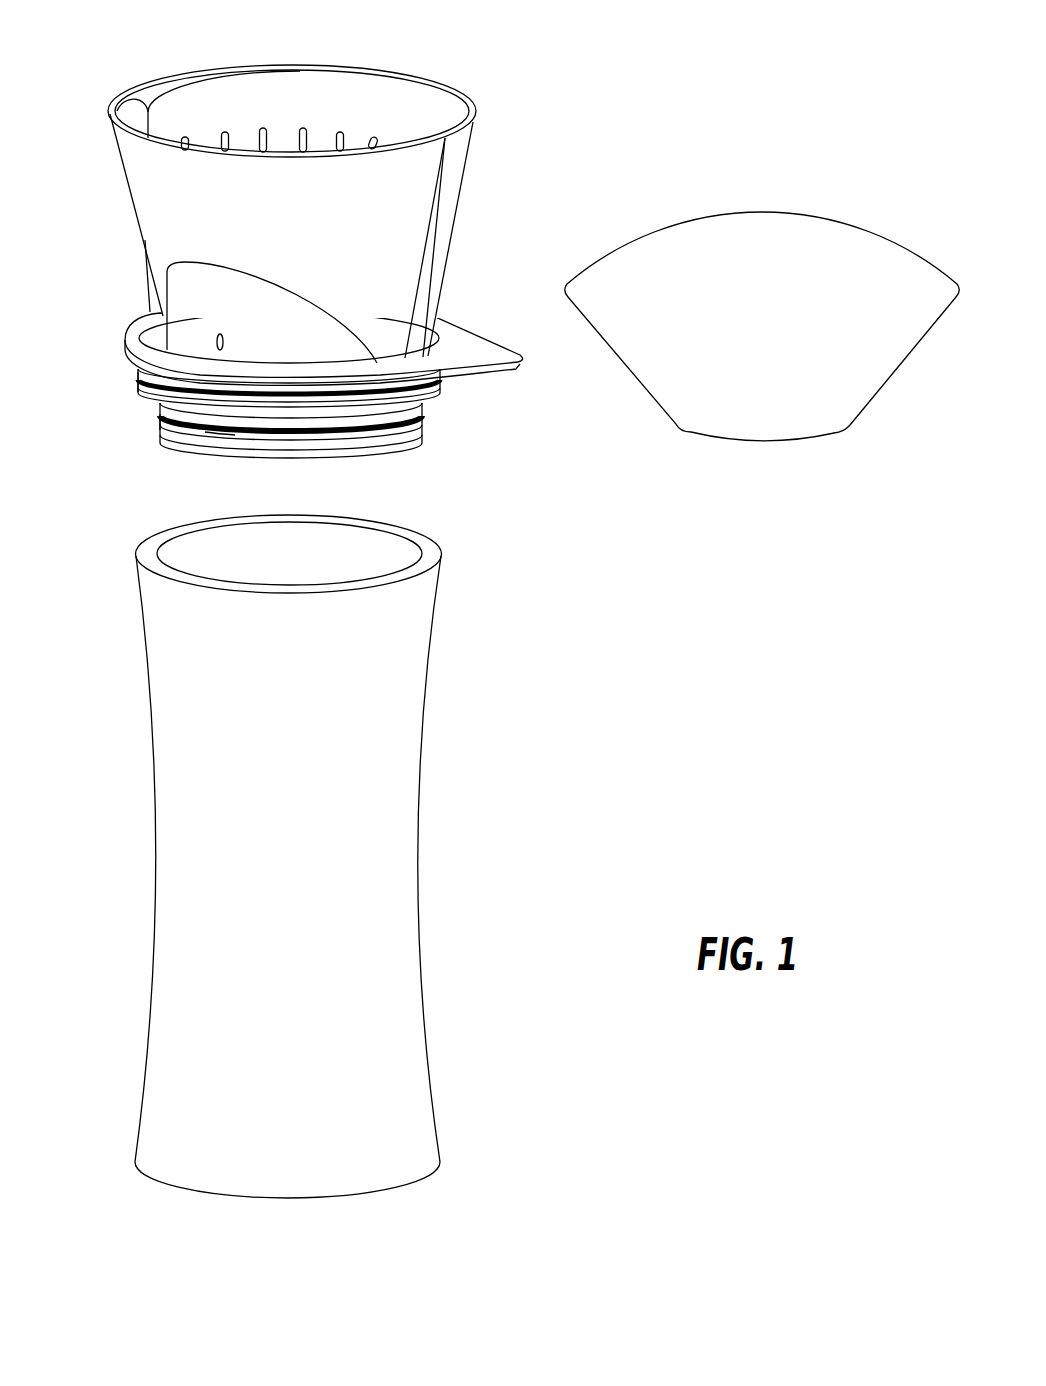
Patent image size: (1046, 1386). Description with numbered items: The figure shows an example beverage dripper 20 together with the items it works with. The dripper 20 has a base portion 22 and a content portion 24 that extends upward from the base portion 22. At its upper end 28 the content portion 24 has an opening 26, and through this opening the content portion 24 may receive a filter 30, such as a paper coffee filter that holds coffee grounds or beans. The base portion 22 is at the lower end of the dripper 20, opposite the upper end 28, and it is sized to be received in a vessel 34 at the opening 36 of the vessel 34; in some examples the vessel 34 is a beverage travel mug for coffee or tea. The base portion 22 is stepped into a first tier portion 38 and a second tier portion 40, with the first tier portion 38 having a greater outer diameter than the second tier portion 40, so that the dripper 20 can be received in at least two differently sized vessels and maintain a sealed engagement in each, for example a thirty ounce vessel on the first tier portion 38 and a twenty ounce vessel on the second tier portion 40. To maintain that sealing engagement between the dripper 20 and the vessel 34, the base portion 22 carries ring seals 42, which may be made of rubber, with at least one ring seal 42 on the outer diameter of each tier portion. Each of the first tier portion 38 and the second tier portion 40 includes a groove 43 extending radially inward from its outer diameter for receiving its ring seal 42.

The beverage dripper 20 is at (501, 600).
The base portion 22 is at (283, 247).
The content portion 24 is at (325, 247).
The opening 26 is at (360, 107).
The upper end 28 is at (86, 91).
The filter 30 is at (818, 217).
The vessel 34 is at (326, 851).
The opening of the vessel 36 is at (366, 545).
The first tier portion 38 is at (404, 397).
The second tier portion 40 is at (404, 431).
The ring seal 42 is at (137, 372).
The groove 43 is at (213, 398).